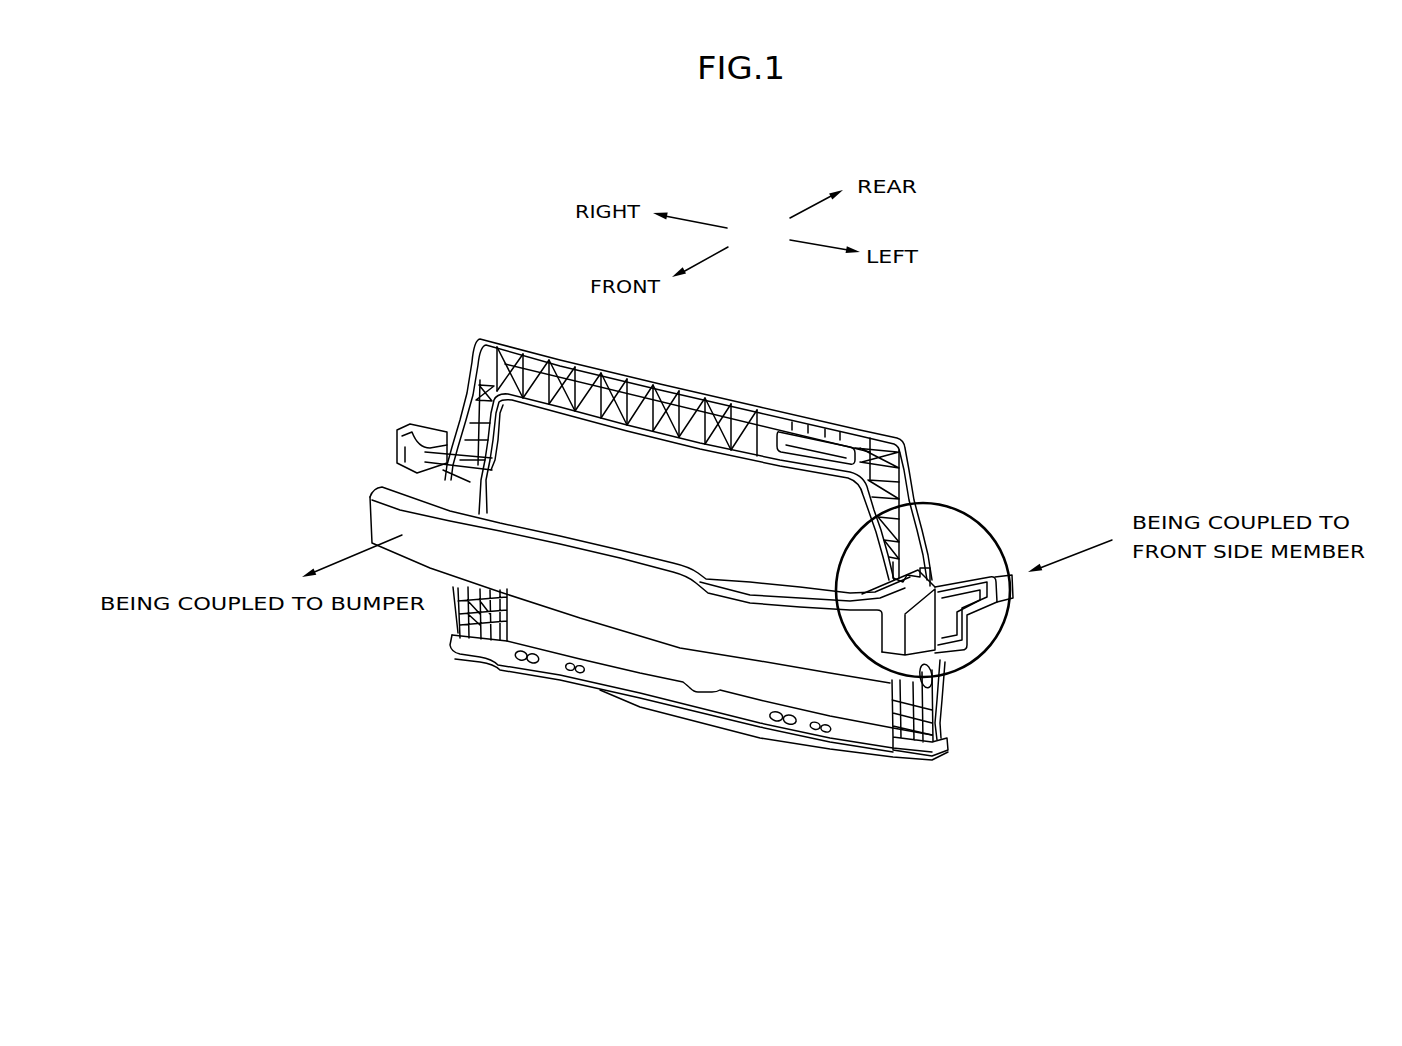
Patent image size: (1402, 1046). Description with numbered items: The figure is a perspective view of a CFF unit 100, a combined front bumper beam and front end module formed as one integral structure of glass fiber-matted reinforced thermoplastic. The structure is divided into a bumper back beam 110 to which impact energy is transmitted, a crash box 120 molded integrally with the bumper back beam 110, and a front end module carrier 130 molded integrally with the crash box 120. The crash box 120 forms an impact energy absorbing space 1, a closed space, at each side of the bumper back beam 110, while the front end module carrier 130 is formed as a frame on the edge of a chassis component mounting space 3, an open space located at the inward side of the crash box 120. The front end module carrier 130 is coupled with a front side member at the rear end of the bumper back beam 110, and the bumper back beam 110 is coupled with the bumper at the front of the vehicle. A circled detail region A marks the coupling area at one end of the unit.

The impact energy absorbing space 1 is at (420, 490).
The chassis component mounting space 3 is at (730, 488).
The CFF unit 100 is at (659, 681).
The bumper back beam 110 is at (707, 620).
The crash box 120 is at (897, 590).
The front end module carrier 130 is at (800, 730).
The detail portion A is at (863, 672).